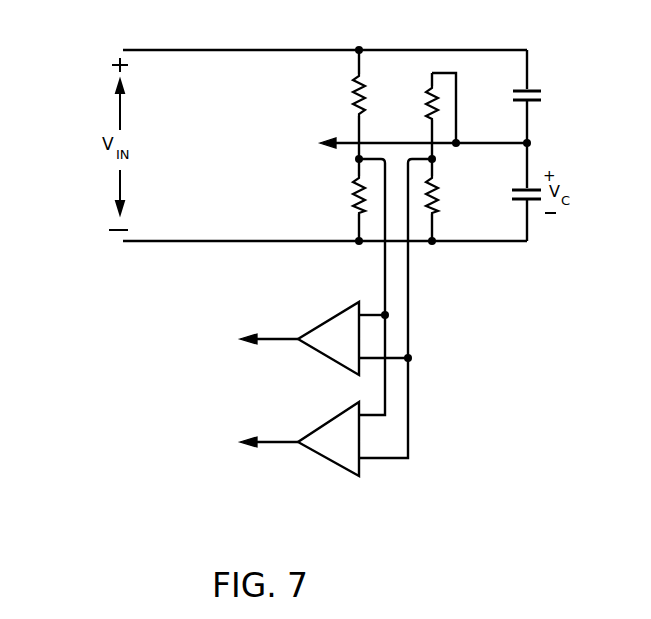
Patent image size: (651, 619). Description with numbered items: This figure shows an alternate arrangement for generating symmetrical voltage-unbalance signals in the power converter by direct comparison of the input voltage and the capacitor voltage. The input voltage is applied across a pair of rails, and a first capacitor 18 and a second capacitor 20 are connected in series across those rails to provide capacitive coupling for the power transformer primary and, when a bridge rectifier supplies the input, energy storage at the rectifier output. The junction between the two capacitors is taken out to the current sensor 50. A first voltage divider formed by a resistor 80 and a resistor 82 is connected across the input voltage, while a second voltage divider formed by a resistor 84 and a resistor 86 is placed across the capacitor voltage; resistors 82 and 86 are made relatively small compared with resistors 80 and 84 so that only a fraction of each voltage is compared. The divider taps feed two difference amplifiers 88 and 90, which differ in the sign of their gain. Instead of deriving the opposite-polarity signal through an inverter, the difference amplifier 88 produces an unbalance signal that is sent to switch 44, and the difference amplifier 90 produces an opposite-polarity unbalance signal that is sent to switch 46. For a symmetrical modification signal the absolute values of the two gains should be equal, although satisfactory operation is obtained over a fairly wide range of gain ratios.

The first capacitor 18 is at (531, 89).
The second capacitor 20 is at (520, 189).
The switch 44 is at (176, 344).
The switch 46 is at (176, 446).
The current sensor 50 is at (245, 142).
The resistor 80 is at (355, 94).
The resistor 82 is at (355, 194).
The resistor 84 is at (428, 109).
The resistor 86 is at (436, 200).
The difference amplifier 88 is at (338, 306).
The difference amplifier 90 is at (318, 419).